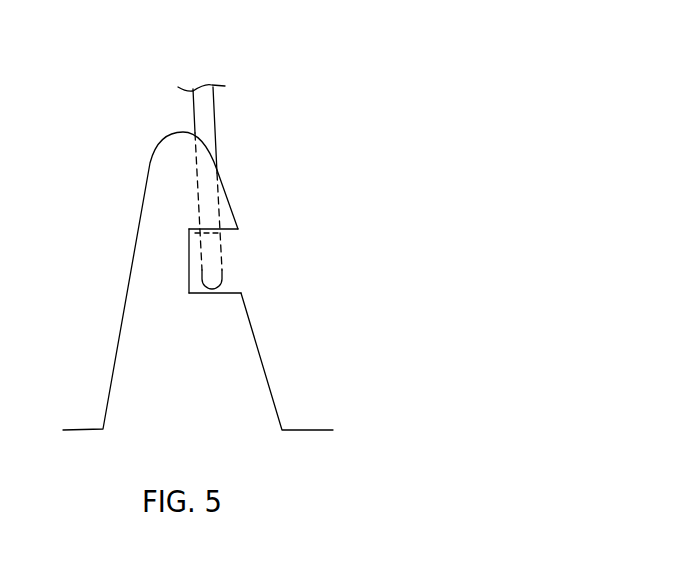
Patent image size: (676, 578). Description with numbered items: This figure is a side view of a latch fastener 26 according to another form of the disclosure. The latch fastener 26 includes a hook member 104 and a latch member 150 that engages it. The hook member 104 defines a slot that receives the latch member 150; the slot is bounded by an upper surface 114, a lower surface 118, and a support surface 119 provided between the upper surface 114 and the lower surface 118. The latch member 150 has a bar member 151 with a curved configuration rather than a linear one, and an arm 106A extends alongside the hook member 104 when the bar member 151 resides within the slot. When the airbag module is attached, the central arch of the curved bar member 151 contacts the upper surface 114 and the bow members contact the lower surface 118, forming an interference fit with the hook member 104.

The latch fastener 26 is at (278, 73).
The hook member 104 is at (237, 385).
The arm 106A is at (210, 207).
The upper surface 114 is at (238, 231).
The lower surface 118 is at (233, 292).
The support surface 119 is at (190, 264).
The latch member 150 is at (209, 122).
The bar member 151 is at (212, 272).